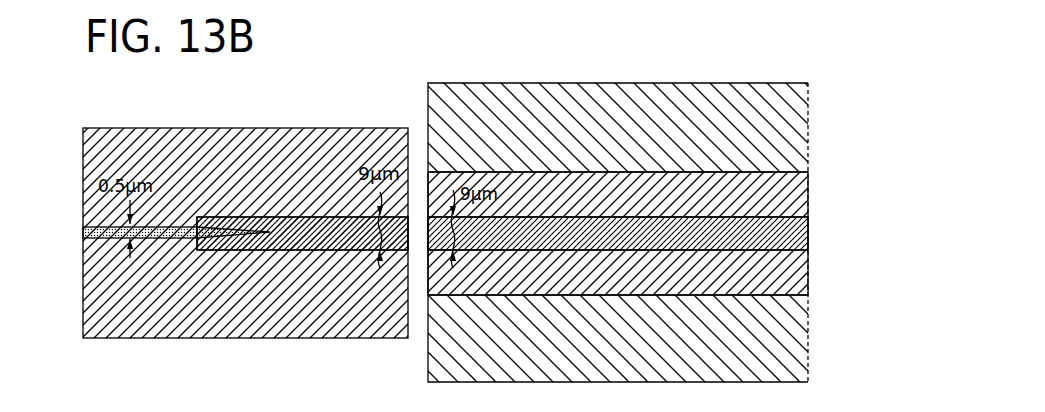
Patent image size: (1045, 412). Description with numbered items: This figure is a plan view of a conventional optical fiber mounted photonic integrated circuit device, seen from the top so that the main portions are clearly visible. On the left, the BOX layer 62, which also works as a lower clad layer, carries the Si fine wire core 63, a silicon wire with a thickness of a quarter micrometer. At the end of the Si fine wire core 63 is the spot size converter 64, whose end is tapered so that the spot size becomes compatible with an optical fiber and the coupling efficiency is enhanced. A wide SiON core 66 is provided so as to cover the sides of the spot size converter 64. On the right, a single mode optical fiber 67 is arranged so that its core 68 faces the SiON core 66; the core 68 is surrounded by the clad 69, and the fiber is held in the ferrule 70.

The BOX layer 62 is at (157, 138).
The Si fine wire core 63 is at (112, 240).
The spot size converter 64 is at (213, 250).
The SiON core 66 is at (293, 217).
The single mode optical fiber 67 is at (865, 182).
The core 68 is at (808, 232).
The clad 69 is at (808, 198).
The ferrule 70 is at (808, 115).